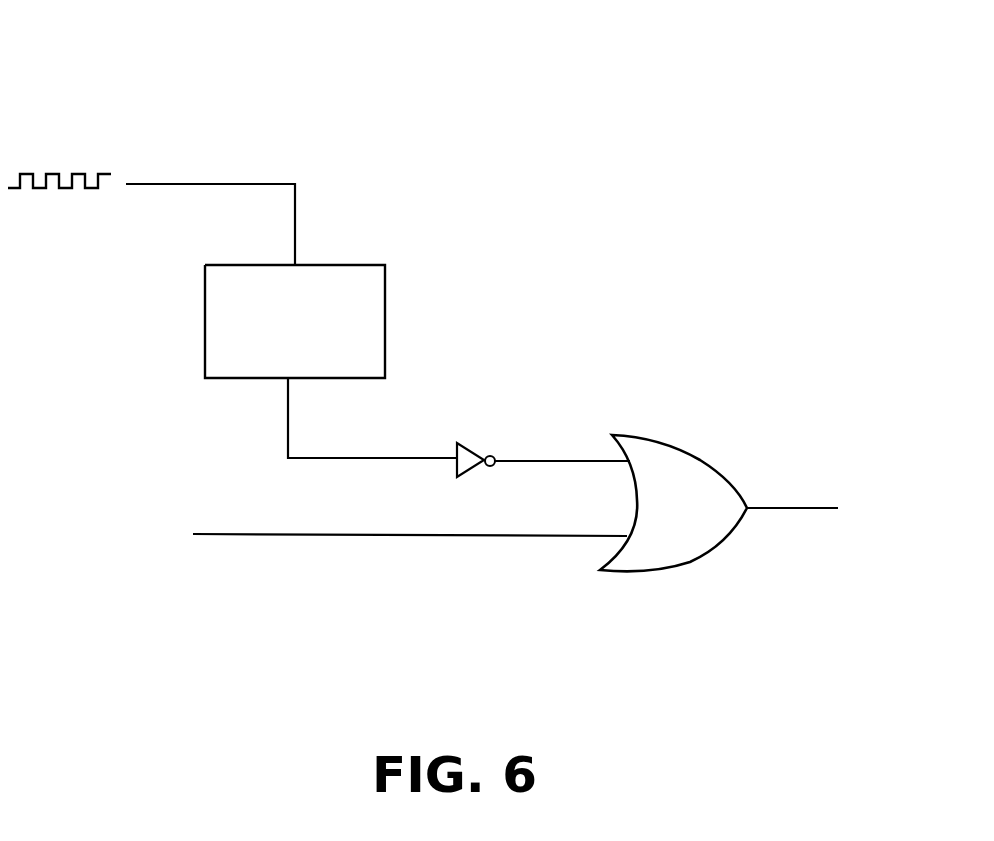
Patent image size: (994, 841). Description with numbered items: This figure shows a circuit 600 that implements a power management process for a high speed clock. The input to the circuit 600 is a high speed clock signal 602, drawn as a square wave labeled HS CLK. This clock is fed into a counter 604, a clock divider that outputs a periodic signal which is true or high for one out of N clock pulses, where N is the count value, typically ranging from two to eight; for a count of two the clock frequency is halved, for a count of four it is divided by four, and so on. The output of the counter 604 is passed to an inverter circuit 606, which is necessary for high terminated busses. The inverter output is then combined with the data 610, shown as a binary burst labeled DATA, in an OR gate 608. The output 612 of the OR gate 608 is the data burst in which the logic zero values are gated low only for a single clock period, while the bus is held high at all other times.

The circuit 600 is at (131, 45).
The high speed clock signal 602 is at (151, 198).
The counter 604 is at (330, 361).
The inverter circuit 606 is at (541, 442).
The OR gate 608 is at (673, 503).
The data 610 is at (331, 541).
The output 612 is at (802, 494).